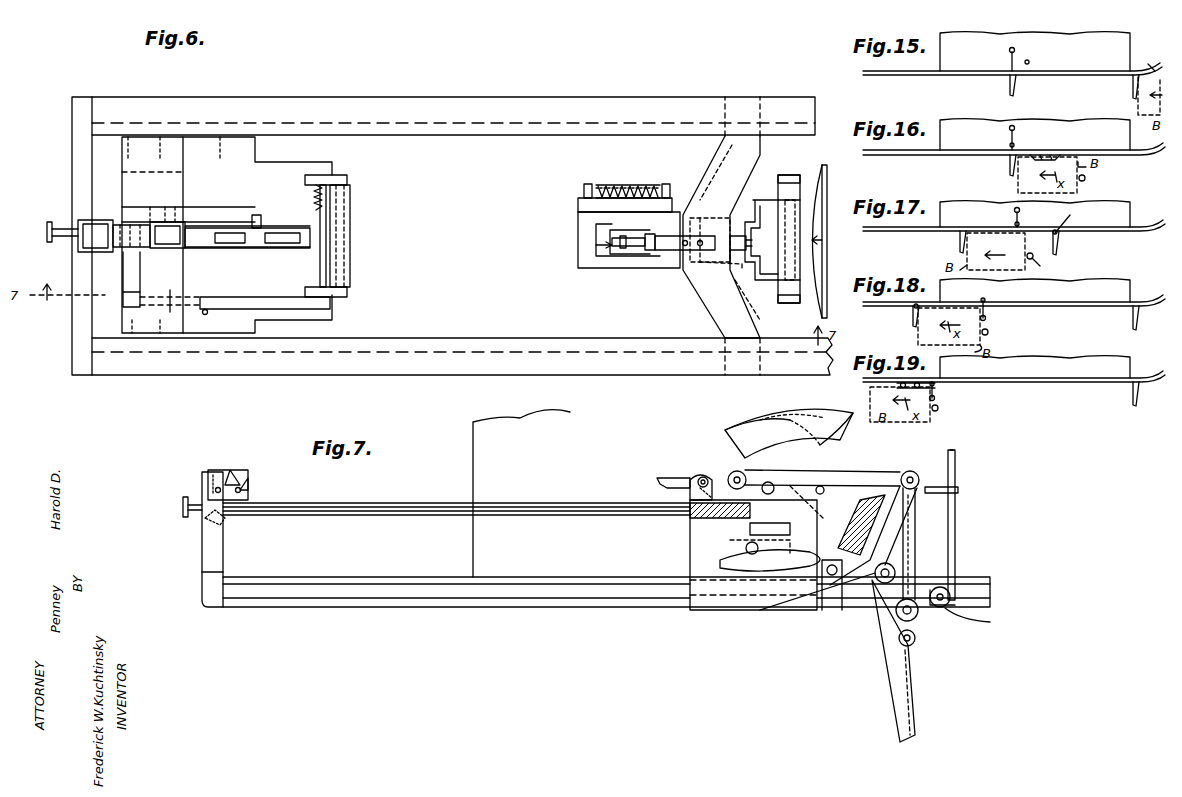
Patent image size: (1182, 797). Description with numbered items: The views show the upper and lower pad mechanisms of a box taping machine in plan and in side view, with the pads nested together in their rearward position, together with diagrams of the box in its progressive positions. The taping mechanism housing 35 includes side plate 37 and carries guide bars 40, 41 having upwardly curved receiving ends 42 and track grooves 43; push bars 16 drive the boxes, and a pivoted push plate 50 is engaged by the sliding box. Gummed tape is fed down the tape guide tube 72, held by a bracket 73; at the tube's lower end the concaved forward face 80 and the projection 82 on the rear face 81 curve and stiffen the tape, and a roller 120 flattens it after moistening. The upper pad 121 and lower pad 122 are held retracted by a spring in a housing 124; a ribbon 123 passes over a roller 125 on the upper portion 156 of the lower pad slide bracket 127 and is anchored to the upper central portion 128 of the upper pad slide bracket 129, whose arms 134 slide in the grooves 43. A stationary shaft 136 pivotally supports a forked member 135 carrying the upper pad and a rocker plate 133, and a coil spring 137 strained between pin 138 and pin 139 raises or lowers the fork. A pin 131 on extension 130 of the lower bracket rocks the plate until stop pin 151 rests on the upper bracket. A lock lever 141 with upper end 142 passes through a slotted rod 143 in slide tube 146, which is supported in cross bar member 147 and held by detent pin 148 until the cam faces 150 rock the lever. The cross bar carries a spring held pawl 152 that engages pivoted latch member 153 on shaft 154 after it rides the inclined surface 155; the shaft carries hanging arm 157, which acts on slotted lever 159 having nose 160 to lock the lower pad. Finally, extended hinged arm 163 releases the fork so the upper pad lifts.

In FIG. 16, the transverse push bar 16 is at (1086, 180).
In FIG. 17, the transverse push bar 16 is at (1044, 265).
In FIG. 18, the transverse push bar 16 is at (989, 334).
In FIG. 19, the transverse push bar 16 is at (939, 411).
In FIG. 15, the taping mechanism housing 35 is at (998, 29).
In FIG. 16, the taping mechanism housing 35 is at (983, 118).
In FIG. 17, the taping mechanism housing 35 is at (973, 198).
In FIG. 18, the taping mechanism housing 35 is at (1130, 282).
In FIG. 19, the taping mechanism housing 35 is at (1104, 358).
In FIG. 7, the side plate 37 is at (521, 493).
In FIG. 6, the guide bar 40 is at (125, 368).
In FIG. 15, the guide bar 40 is at (923, 75).
In FIG. 16, the guide bar 40 is at (923, 155).
In FIG. 17, the guide bar 40 is at (925, 231).
In FIG. 18, the guide bar 40 is at (1014, 300).
In FIG. 19, the guide bar 40 is at (1064, 382).
In FIG. 6, the guide bar 41 is at (122, 105).
In FIG. 7, the guide bar 41 is at (373, 607).
In FIG. 15, the upwardly curved receiving end 42 is at (1148, 58).
In FIG. 6, the longitudinal track groove 43 is at (358, 125).
In FIG. 7, the longitudinal track groove 43 is at (300, 598).
In FIG. 15, the pivoted push plate 50 is at (1132, 90).
In FIG. 16, the pivoted push plate 50 is at (1036, 154).
In FIG. 17, the pivoted push plate 50 is at (1060, 244).
In FIG. 18, the pivoted push plate 50 is at (1132, 318).
In FIG. 19, the pivoted push plate 50 is at (1132, 396).
In FIG. 7, the tape guide tube 72 is at (956, 455).
In FIG. 7, the bracket 73 is at (945, 487).
In FIG. 6, the forward face 80 is at (826, 164).
In FIG. 7, the forward face 80 is at (940, 530).
In FIG. 6, the rear face 81 is at (828, 195).
In FIG. 7, the rear face 81 is at (956, 513).
In FIG. 6, the projection 82 is at (828, 242).
In FIG. 7, the tape roller 120 is at (950, 610).
In FIG. 6, the upper pad 121 is at (800, 176).
In FIG. 7, the upper pad 121 is at (900, 548).
In FIG. 15, the upper pad 121 is at (1015, 52).
In FIG. 16, the upper pad 121 is at (1010, 138).
In FIG. 17, the upper pad 121 is at (1020, 216).
In FIG. 18, the upper pad 121 is at (988, 316).
In FIG. 19, the upper pad 121 is at (940, 388).
In FIG. 6, the lower pad 122 is at (352, 247).
In FIG. 7, the lower pad 122 is at (912, 690).
In FIG. 15, the lower pad 122 is at (1016, 86).
In FIG. 16, the lower pad 122 is at (1010, 166).
In FIG. 17, the lower pad 122 is at (958, 240).
In FIG. 18, the lower pad 122 is at (912, 318).
In FIG. 19, the lower pad 122 is at (905, 380).
In FIG. 6, the ribbon 123 is at (668, 255).
In FIG. 7, the ribbon 123 is at (760, 440).
In FIG. 7, the housing 124 is at (768, 427).
In FIG. 6, the roller 125 is at (178, 210).
In FIG. 7, the roller 125 is at (708, 478).
In FIG. 6, the lower pad slide bracket 127 is at (205, 140).
In FIG. 7, the lower pad slide bracket 127 is at (695, 612).
In FIG. 6, the upper central portion 128 is at (722, 252).
In FIG. 6, the upper pad slide bracket 129 is at (595, 250).
In FIG. 7, the upper pad slide bracket 129 is at (745, 548).
In FIG. 6, the extension 130 is at (218, 222).
In FIG. 7, the extension 130 is at (822, 472).
In FIG. 6, the pin 131 is at (256, 202).
In FIG. 7, the pin 131 is at (812, 484).
In FIG. 6, the rocker plate 133 is at (672, 200).
In FIG. 7, the rocker plate 133 is at (750, 529).
In FIG. 6, the arms 134 is at (730, 196).
In FIG. 6, the forked member 135 is at (585, 262).
In FIG. 7, the forked member 135 is at (712, 568).
In FIG. 6, the stationary shaft 136 is at (622, 260).
In FIG. 6, the coil spring 137 is at (628, 185).
In FIG. 7, the coil spring 137 is at (770, 575).
In FIG. 6, the pin 138 is at (658, 186).
In FIG. 6, the pin 139 is at (585, 185).
In FIG. 7, the forked lock lever 141 is at (828, 612).
In FIG. 6, the upper end 142 is at (708, 265).
In FIG. 7, the upper end 142 is at (860, 470).
In FIG. 6, the slotted rod 143 is at (645, 252).
In FIG. 6, the slide tube 146 is at (635, 255).
In FIG. 7, the slide tube 146 is at (554, 503).
In FIG. 6, the cross bar member 147 is at (84, 312).
In FIG. 7, the cross bar member 147 is at (203, 580).
In FIG. 7, the detent pin 148 is at (205, 518).
In FIG. 6, the inner cam faces 150 is at (708, 222).
In FIG. 6, the stop pin 151 is at (605, 232).
In FIG. 7, the stop pin 151 is at (730, 545).
In FIG. 6, the spring held pawl 152 is at (100, 220).
In FIG. 7, the spring held pawl 152 is at (262, 472).
In FIG. 6, the pivoted latch member 153 is at (120, 250).
In FIG. 7, the pivoted latch member 153 is at (672, 477).
In FIG. 6, the shaft 154 is at (140, 272).
In FIG. 7, the shaft 154 is at (705, 478).
In FIG. 7, the inclined surface 155 is at (228, 470).
In FIG. 6, the upper portion 156 is at (155, 220).
In FIG. 7, the upper portion 156 is at (690, 495).
In FIG. 6, the downwardly hanging arm 157 is at (175, 290).
In FIG. 6, the slotted lever 159 is at (252, 296).
In FIG. 6, the nose 160 is at (208, 315).
In FIG. 6, the extended hinged arm 163 is at (302, 228).
In FIG. 7, the extended hinged arm 163 is at (872, 470).